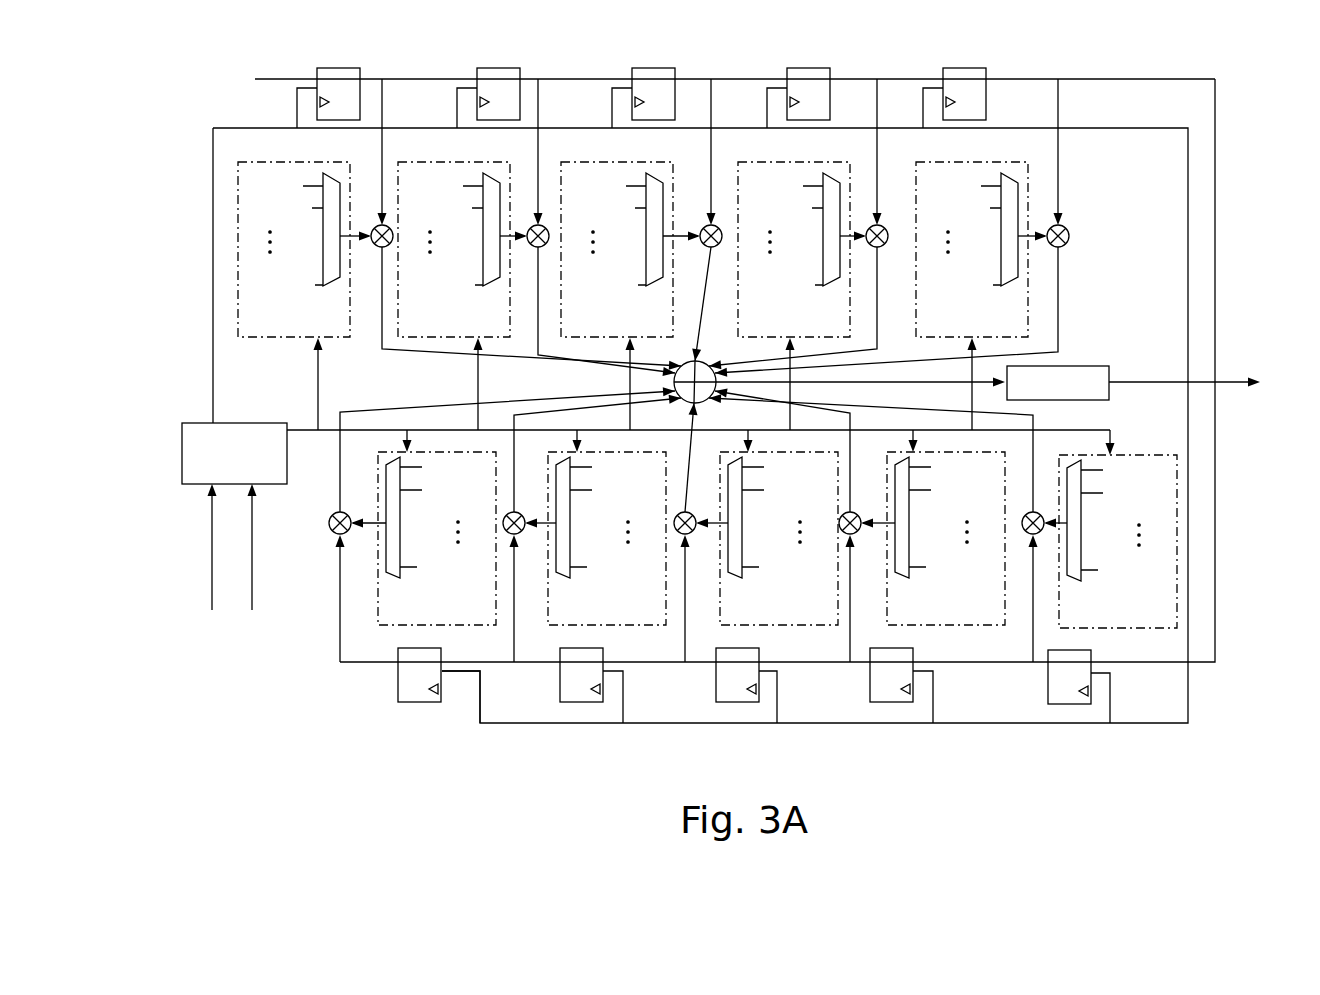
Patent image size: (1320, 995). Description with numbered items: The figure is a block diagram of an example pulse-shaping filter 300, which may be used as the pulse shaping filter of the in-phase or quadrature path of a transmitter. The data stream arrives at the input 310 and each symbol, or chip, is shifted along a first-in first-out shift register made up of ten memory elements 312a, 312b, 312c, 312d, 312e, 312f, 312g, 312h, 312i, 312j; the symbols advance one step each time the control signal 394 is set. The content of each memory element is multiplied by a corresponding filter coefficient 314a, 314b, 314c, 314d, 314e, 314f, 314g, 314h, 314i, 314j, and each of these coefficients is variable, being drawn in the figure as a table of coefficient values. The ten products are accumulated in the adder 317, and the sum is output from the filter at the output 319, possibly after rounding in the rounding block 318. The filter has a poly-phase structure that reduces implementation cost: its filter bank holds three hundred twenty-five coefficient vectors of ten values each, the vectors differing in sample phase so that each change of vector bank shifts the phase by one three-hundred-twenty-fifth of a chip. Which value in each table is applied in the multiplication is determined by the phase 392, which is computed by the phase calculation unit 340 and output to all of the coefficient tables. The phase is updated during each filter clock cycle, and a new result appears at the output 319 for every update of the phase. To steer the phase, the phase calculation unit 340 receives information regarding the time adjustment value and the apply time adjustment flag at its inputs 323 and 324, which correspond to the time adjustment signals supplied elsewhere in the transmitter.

The pulse-shaping filter 300 is at (178, 108).
The input 310 is at (287, 79).
The memory element 312a is at (340, 68).
The memory element 312b is at (497, 68).
The memory element 312c is at (653, 68).
The memory element 312d is at (808, 68).
The memory element 312e is at (965, 68).
The memory element 312f is at (1048, 672).
The memory element 312g is at (870, 670).
The memory element 312h is at (716, 670).
The memory element 312i is at (560, 670).
The memory element 312j is at (398, 670).
The filter coefficient 314a is at (304, 284).
The filter coefficient 314b is at (462, 284).
The filter coefficient 314c is at (630, 284).
The filter coefficient 314d is at (802, 284).
The filter coefficient 314e is at (981, 284).
The filter coefficient 314f is at (1110, 542).
The filter coefficient 314g is at (933, 541).
The filter coefficient 314h is at (767, 541).
The filter coefficient 314i is at (595, 541).
The filter coefficient 314j is at (423, 541).
The adder 317 is at (674, 383).
The rounding unit 318 is at (912, 383).
The output 319 is at (1160, 380).
The time adjustment value input 323 is at (212, 588).
The apply time adjustment flag input 324 is at (252, 572).
The phase calculation unit 340 is at (234, 453).
The phase 392 is at (305, 430).
The control signal 394 is at (212, 380).